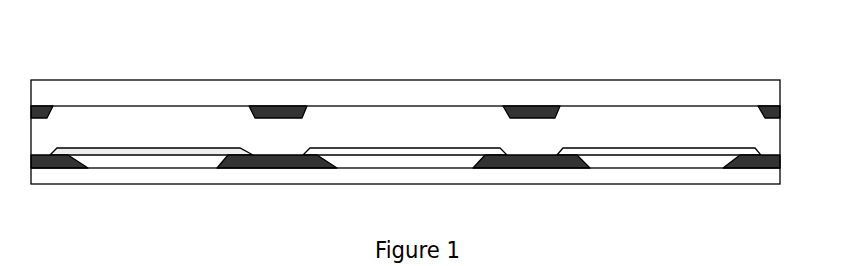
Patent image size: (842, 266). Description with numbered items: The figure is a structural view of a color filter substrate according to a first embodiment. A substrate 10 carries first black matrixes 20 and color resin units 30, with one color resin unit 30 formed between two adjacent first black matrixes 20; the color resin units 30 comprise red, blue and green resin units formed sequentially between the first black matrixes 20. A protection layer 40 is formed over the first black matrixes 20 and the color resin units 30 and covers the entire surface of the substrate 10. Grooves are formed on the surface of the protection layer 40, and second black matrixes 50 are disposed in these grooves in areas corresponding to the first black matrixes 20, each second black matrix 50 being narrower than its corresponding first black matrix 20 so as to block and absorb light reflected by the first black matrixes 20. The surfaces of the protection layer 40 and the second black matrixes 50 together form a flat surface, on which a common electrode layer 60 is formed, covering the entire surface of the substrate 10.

The substrate 10 is at (405, 202).
The first black matrixes 20 is at (405, 195).
The color resin units 30 is at (405, 192).
The protection layer 40 is at (405, 81).
The second black matrixes 50 is at (405, 66).
The common electrode layer 60 is at (405, 60).